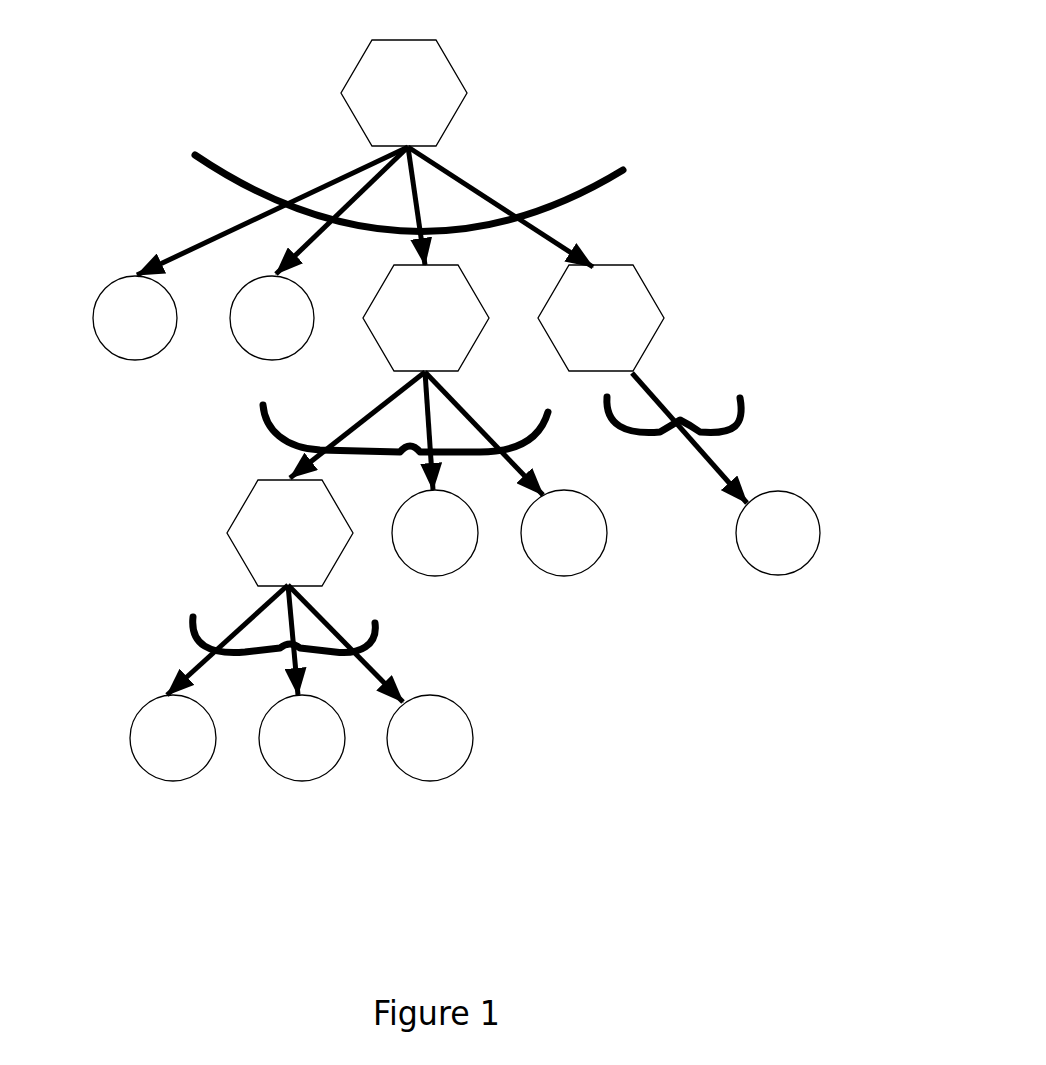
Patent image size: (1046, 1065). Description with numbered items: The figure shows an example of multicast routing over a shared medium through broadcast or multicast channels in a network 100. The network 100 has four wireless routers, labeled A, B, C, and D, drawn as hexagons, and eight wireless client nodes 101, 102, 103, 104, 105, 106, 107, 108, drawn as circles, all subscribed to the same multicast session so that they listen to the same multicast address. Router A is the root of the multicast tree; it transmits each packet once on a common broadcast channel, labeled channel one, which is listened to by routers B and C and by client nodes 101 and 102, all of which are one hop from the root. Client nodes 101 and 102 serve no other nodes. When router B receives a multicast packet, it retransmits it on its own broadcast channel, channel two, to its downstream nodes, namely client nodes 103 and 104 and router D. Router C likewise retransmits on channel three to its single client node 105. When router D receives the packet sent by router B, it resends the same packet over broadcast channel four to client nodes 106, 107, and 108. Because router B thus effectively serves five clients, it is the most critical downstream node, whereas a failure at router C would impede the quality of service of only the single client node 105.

The network 100 is at (459, 353).
The wireless client node 101 is at (108, 330).
The wireless client node 102 is at (300, 310).
The wireless client node 103 is at (435, 568).
The wireless client node 104 is at (564, 563).
The wireless client node 105 is at (777, 555).
The wireless client node 106 is at (153, 760).
The wireless client node 107 is at (305, 760).
The wireless client node 108 is at (430, 760).